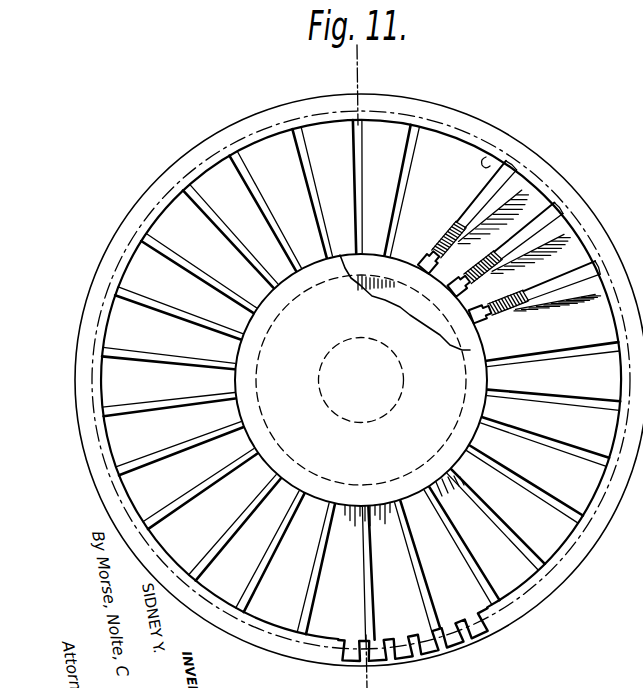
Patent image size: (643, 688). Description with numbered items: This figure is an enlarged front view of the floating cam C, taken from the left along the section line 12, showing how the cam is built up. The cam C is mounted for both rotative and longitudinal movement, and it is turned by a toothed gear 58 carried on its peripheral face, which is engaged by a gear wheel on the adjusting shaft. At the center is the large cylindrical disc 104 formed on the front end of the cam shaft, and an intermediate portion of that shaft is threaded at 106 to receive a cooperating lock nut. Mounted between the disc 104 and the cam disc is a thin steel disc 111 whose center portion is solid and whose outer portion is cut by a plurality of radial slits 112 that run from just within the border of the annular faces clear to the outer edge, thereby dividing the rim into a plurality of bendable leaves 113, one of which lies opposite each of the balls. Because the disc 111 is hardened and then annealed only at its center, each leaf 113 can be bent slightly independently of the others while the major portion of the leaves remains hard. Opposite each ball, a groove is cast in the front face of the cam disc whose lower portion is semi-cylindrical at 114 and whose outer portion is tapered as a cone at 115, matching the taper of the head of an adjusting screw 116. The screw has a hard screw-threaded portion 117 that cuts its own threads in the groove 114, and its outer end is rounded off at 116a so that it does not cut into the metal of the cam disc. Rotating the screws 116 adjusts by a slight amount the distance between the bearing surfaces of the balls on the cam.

The section line 12 is at (330, 78).
The toothed gear 58 is at (421, 645).
The cylindrical disc 104 is at (233, 378).
The threaded portion 106 is at (404, 388).
The steel disc 111 is at (393, 118).
The radial slits 112 is at (305, 176).
The bendable leaves 113 is at (308, 130).
The semi-cylindrical groove portion 114 is at (500, 312).
The conical groove portion 115 is at (581, 275).
The adjusting screw 116 is at (517, 172).
The rounded screw end 116a is at (486, 157).
The hard screw-threaded portion 117 is at (450, 233).
The floating cam C is at (432, 98).